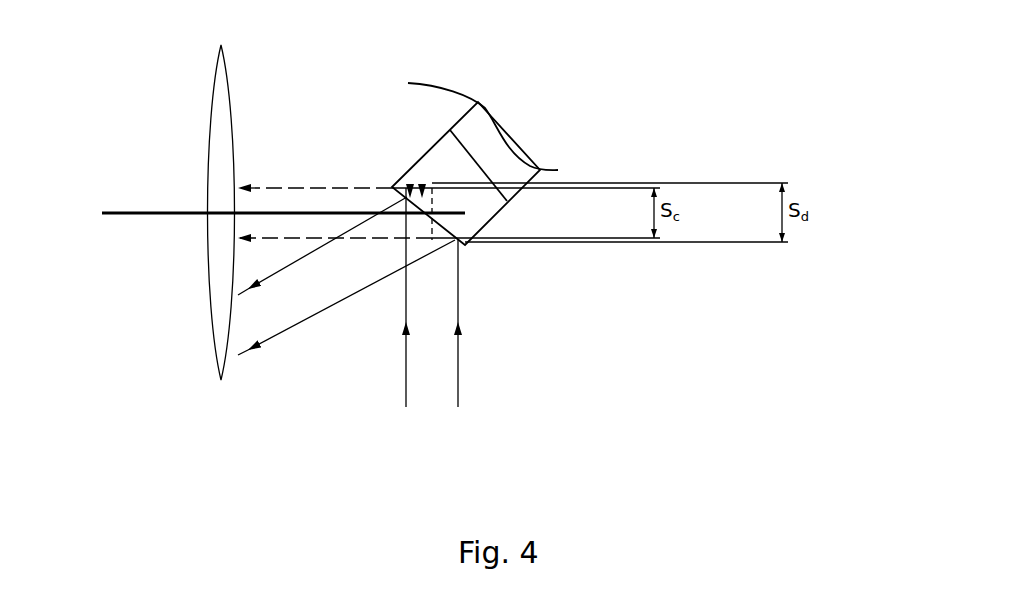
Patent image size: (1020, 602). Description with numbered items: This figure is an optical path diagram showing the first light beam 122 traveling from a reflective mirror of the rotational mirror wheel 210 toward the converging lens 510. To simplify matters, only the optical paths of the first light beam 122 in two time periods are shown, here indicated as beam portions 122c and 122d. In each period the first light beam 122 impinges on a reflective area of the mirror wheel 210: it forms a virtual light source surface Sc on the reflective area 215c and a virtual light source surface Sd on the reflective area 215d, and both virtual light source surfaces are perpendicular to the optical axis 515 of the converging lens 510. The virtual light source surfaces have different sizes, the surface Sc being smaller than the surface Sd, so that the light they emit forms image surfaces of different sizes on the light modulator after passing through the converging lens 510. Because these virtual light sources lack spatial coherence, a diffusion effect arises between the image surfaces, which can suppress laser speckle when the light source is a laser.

The first light beam 122 is at (405, 366).
The light beam portion 122c is at (300, 186).
The light beam portion 122d is at (300, 258).
The rotational mirror wheel 210 is at (483, 130).
The reflective area 215c is at (410, 186).
The reflective area 215d is at (422, 186).
The converging lens 510 is at (217, 322).
The optical axis 515 is at (130, 213).